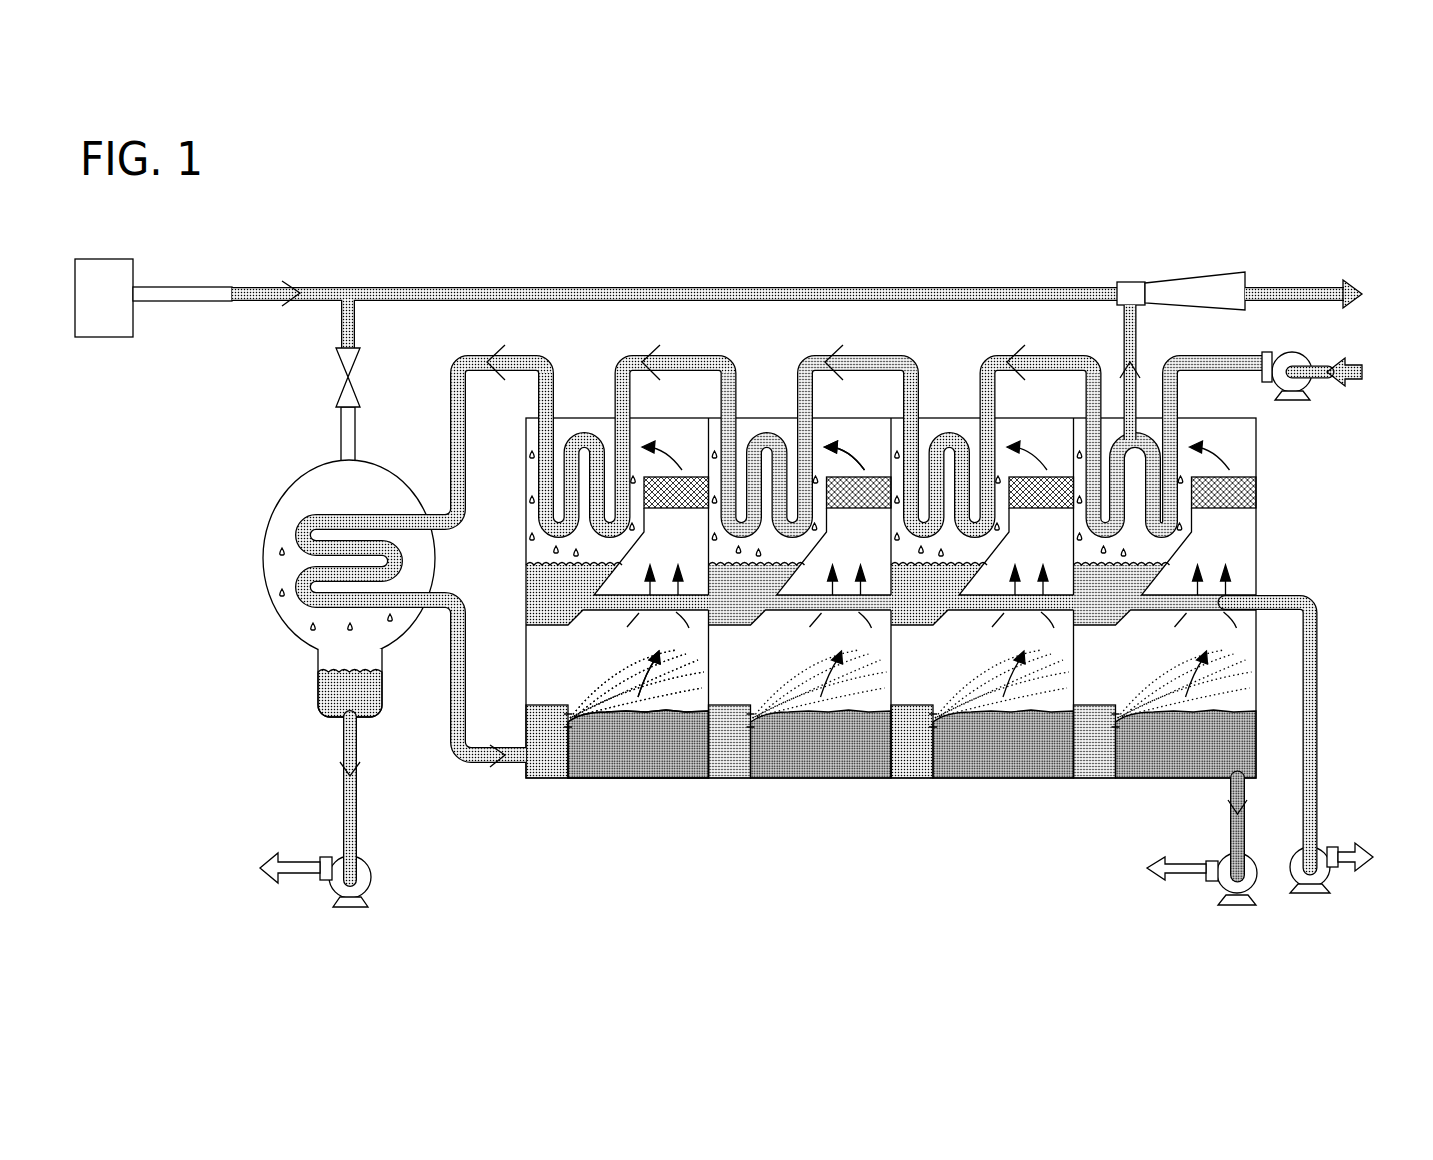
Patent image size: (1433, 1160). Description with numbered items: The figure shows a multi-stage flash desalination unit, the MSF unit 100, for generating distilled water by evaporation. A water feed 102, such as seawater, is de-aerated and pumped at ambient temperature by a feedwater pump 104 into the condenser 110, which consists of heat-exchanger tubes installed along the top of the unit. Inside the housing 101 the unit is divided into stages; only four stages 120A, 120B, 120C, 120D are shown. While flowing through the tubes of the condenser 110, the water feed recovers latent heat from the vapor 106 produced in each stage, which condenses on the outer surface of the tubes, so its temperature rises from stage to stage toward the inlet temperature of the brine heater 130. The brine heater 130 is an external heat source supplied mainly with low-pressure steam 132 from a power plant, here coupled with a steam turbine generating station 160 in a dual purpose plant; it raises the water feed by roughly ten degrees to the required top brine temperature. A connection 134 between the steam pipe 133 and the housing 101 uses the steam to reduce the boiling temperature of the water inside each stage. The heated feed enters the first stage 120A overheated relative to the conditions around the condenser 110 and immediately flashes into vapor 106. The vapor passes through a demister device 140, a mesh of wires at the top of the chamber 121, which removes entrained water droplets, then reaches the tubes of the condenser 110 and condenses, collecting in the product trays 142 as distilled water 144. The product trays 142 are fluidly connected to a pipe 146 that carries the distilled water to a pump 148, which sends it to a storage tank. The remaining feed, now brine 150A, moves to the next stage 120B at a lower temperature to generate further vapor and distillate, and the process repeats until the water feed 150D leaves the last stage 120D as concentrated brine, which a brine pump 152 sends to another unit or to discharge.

The MSF unit 100 is at (818, 258).
The housing 101 is at (768, 422).
The water feed 102 is at (1363, 372).
The feedwater pump 104 is at (1292, 352).
The vapor 106 is at (680, 472).
The condenser 110 is at (918, 388).
The first stage 120A is at (628, 780).
The second stage 120B is at (797, 780).
The third stage 120C is at (1005, 780).
The last stage 120D is at (1168, 780).
The chamber 121 is at (872, 435).
The brine heater 130 is at (262, 532).
The low-pressure steam 132 is at (237, 290).
The steam pipe 133 is at (487, 288).
The connection 134 is at (1137, 338).
The demister device 140 is at (662, 510).
The product trays 142 is at (598, 580).
The distilled water 144 is at (540, 606).
The pipe 146 is at (1317, 707).
The pump 148 is at (1318, 847).
The brine 150A is at (680, 755).
The water feed exiting last stage 150D is at (1268, 826).
The brine pump 152 is at (1220, 887).
The steam turbine generating station 160 is at (108, 340).